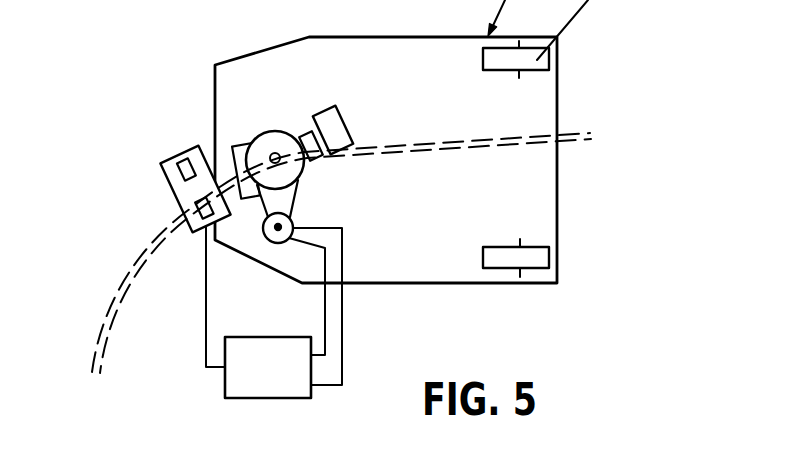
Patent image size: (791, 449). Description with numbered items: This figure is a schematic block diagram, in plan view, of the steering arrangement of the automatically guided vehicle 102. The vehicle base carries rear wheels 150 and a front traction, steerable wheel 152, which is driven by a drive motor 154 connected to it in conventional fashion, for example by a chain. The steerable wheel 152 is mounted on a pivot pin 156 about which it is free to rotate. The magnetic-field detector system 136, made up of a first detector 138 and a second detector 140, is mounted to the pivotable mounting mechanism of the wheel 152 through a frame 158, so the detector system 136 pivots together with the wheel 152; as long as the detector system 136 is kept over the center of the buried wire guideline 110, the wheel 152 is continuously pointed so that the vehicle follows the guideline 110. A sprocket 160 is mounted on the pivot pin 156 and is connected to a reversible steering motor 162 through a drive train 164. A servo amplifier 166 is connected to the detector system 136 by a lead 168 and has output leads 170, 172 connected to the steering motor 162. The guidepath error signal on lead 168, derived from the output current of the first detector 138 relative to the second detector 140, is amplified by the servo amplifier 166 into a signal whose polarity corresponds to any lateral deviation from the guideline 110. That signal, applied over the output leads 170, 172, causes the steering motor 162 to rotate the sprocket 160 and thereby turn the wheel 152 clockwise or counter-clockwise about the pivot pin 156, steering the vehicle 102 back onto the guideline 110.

The guided vehicle 102 is at (578, 85).
The wire guideline 110 is at (120, 267).
The magnetic-field detector system 136 is at (170, 195).
The first detector 138 is at (173, 162).
The second detector 140 is at (190, 233).
The rear wheels 150 is at (538, 255).
The front traction, steerable wheel 152 is at (297, 121).
The drive motor 154 is at (337, 123).
The pivot pin 156 is at (303, 170).
The frame 158 is at (239, 200).
The sprocket 160 is at (268, 131).
The reversible steering motor 162 is at (278, 243).
The drive train 164 is at (294, 198).
The servo amplifier 166 is at (295, 398).
The lead 168 is at (205, 332).
The output lead 170 is at (327, 310).
The output lead 172 is at (343, 346).